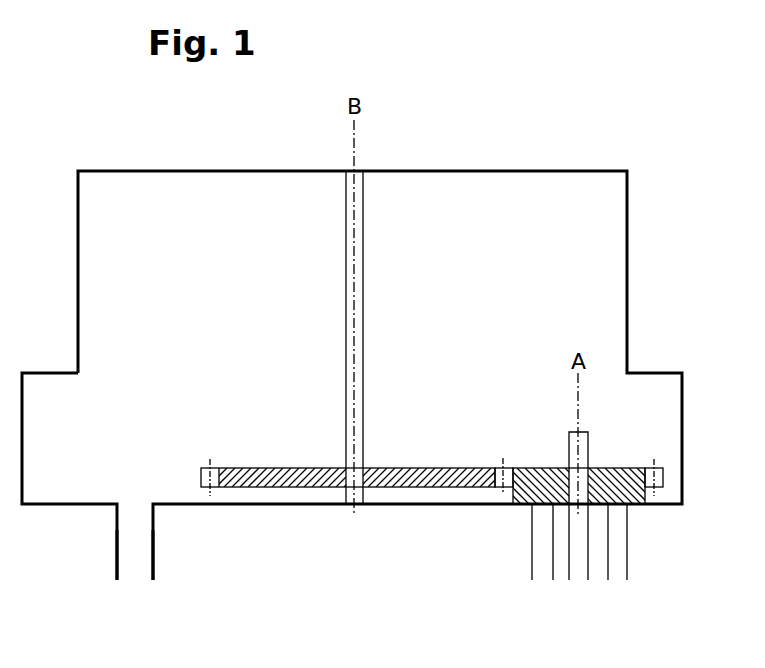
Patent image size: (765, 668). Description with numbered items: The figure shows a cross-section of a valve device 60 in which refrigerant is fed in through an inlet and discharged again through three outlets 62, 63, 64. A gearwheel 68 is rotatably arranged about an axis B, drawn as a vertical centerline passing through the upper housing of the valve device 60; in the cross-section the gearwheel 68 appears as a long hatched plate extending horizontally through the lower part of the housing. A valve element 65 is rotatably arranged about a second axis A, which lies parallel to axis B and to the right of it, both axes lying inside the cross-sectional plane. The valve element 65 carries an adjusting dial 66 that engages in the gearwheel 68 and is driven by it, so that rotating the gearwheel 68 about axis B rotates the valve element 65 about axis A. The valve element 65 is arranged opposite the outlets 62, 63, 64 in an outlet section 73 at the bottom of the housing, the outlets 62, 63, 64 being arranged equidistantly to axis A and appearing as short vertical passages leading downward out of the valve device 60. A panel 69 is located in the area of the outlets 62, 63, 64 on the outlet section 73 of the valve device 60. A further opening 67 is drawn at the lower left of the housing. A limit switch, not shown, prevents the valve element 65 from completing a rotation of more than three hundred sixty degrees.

The valve device 60 is at (480, 145).
The outlet 62 is at (542, 573).
The outlet 63 is at (578, 570).
The outlet 64 is at (616, 570).
The valve element 65 is at (533, 455).
The adjusting dial 66 is at (663, 478).
The opening 67 is at (137, 562).
The gearwheel 68 is at (271, 487).
The panel 69 is at (513, 491).
The outlet section 73 is at (523, 506).